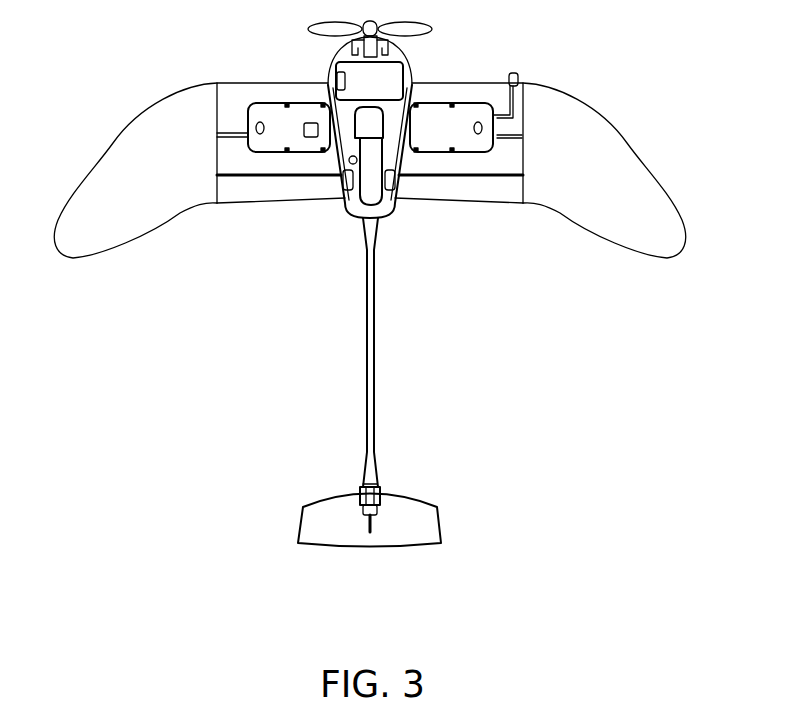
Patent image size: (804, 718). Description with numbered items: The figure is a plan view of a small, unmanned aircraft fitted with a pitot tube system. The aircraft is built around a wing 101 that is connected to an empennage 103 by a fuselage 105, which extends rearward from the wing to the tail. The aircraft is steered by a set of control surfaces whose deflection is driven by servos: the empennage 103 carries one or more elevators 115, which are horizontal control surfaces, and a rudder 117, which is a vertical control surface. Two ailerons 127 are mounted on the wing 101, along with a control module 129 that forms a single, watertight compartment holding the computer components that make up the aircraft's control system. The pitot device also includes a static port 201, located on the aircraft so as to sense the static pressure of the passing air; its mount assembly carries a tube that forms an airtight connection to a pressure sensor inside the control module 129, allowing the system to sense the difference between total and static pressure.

The wing 101 is at (476, 88).
The empennage 103 is at (383, 548).
The fuselage 105 is at (377, 346).
The elevator 115 is at (437, 527).
The rudder 117 is at (367, 526).
The aileron 127 is at (252, 202).
The control module 129 is at (276, 108).
The static port 201 is at (347, 192).